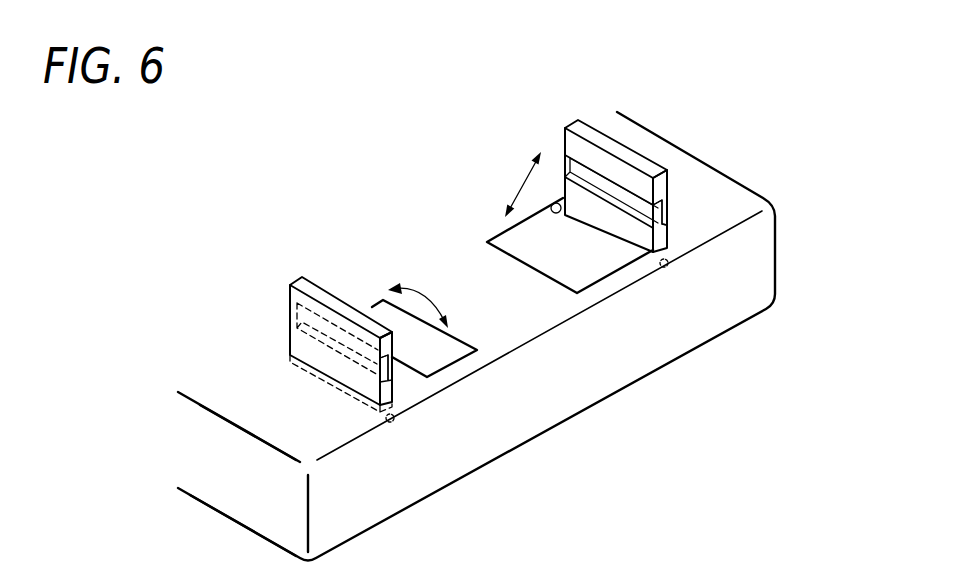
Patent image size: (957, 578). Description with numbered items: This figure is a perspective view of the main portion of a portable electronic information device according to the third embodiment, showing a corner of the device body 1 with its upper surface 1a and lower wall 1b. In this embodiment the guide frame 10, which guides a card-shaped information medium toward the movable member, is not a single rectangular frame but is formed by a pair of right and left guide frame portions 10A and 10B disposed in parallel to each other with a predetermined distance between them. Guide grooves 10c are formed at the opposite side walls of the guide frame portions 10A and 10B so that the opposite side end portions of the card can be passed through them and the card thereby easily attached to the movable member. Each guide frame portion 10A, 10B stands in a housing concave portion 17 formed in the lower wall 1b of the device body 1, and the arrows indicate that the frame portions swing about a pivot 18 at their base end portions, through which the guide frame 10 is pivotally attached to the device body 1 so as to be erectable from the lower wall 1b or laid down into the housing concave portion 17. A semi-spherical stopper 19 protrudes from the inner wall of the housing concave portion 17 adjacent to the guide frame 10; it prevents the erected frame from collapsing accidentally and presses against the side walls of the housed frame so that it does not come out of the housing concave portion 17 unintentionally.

The device body 1 is at (758, 247).
The upper surface 1a is at (262, 543).
The lower wall 1b is at (288, 433).
The guide frame 10 is at (512, 82).
The right guide frame portion 10A is at (580, 131).
The left guide frame portion 10B is at (312, 283).
The guide groove 10c is at (660, 208).
The housing concave portion 17 is at (537, 250).
The pivot 18 is at (668, 267).
The stopper 19 is at (550, 220).